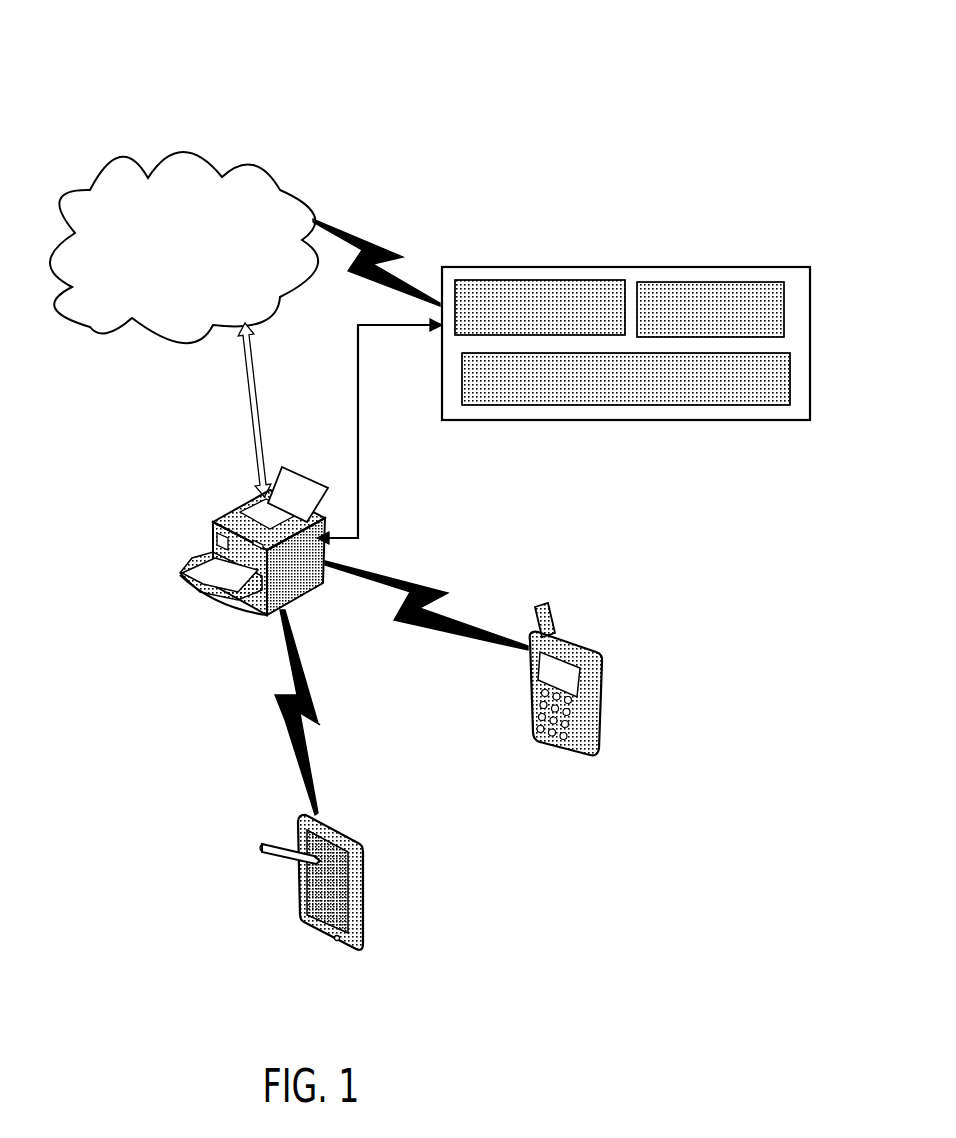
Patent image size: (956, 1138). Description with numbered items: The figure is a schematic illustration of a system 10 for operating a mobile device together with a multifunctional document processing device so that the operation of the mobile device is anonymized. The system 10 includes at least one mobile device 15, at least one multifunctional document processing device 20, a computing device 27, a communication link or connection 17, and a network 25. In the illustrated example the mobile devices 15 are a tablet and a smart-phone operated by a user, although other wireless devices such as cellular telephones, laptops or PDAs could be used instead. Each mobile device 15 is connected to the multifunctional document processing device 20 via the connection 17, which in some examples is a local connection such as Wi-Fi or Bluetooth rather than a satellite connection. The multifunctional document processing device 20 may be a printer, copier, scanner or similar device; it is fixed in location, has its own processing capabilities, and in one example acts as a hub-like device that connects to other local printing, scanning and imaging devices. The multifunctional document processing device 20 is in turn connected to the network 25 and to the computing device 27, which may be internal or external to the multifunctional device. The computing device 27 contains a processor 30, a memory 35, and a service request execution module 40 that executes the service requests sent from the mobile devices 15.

The system 10 is at (468, 56).
The mobile device 15 is at (603, 695).
The connection 17 is at (395, 620).
The multifunctional document processing device 20 is at (208, 532).
The network 25 is at (292, 189).
The computing device 27 is at (626, 266).
The processor 30 is at (540, 307).
The memory 35 is at (710, 309).
The service request execution module 40 is at (626, 379).